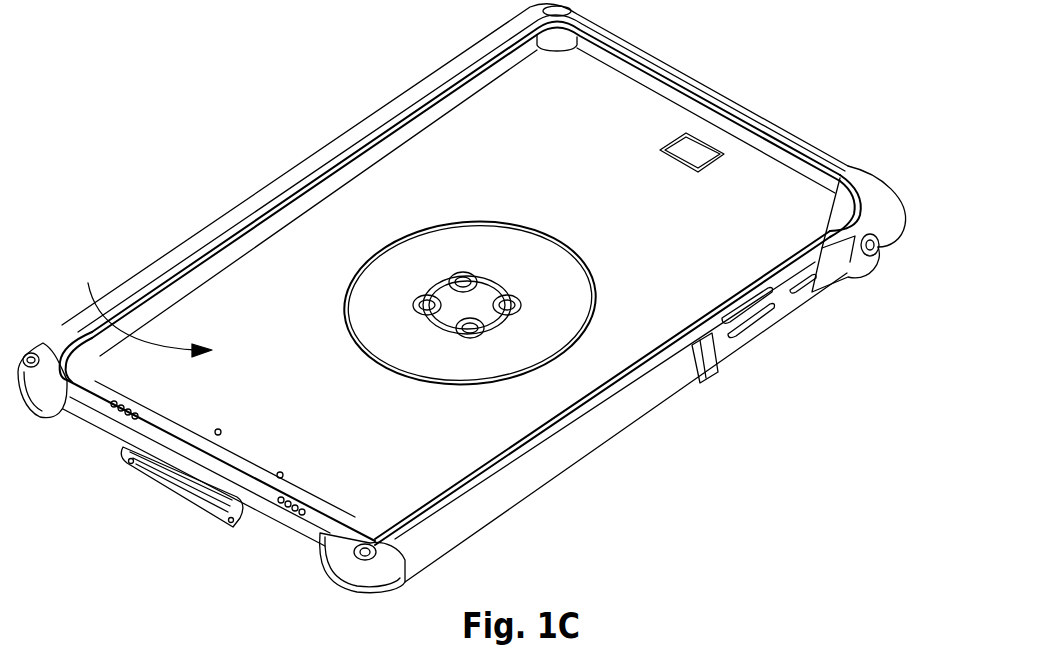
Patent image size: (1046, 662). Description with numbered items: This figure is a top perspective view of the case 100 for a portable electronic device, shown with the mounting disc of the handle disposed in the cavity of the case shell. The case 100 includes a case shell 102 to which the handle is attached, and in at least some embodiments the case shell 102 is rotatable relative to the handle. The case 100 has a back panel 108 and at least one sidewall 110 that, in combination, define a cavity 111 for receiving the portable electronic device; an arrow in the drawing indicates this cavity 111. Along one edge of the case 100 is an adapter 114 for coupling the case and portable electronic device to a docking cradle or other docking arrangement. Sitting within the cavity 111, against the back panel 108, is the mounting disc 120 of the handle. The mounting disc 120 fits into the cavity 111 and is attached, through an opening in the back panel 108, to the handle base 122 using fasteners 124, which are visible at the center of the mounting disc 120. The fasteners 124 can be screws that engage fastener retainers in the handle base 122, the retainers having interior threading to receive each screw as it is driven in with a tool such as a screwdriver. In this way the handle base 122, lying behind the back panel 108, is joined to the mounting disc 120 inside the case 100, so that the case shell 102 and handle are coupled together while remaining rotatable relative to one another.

The case 100 is at (115, 110).
The case shell 102 is at (343, 580).
The back panel 108 is at (583, 137).
The sidewall 110 is at (475, 500).
The cavity 111 is at (142, 308).
The adapter 114 is at (203, 500).
The mounting disc 120 is at (443, 248).
The handle base 122 is at (465, 305).
The fasteners 124 is at (417, 302).